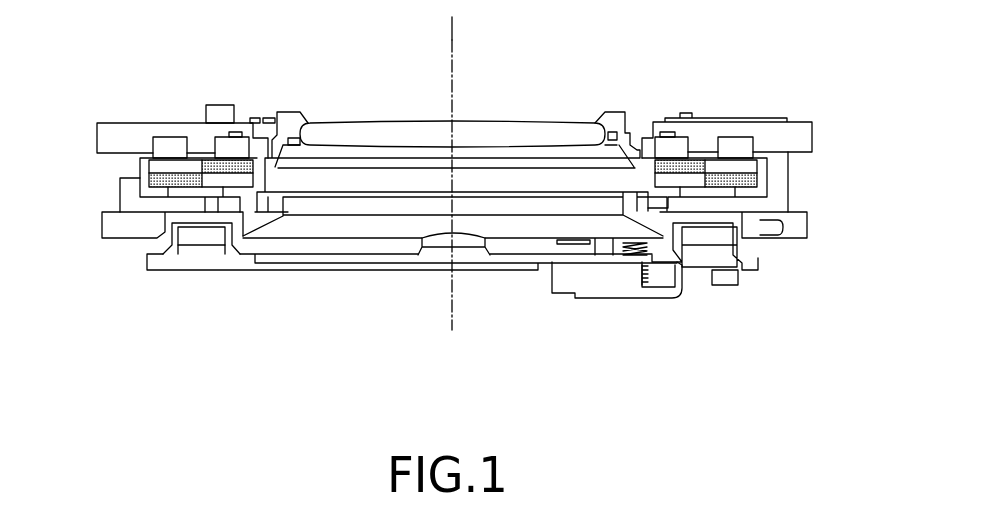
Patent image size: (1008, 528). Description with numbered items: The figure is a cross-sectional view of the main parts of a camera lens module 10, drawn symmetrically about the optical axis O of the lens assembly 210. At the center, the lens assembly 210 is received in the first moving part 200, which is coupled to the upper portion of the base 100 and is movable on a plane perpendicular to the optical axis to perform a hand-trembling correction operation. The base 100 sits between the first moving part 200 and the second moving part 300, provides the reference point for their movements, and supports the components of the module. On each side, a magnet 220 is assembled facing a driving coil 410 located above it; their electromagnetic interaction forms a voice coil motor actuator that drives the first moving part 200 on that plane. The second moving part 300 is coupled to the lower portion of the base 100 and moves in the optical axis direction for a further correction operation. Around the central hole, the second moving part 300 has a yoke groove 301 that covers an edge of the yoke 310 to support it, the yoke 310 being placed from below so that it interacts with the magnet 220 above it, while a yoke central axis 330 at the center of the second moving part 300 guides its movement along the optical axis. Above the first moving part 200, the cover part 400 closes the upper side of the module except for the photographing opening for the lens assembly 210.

The camera lens module 10 is at (174, 37).
The base 100 is at (777, 200).
The first moving part 200 is at (762, 177).
The lens assembly 210 is at (367, 137).
The magnet 220 is at (157, 168).
The second moving part 300 is at (622, 256).
The yoke groove 301 is at (237, 257).
The yoke 310 is at (178, 255).
The yoke central axis 330 is at (438, 250).
The cover part 400 is at (775, 137).
The driving coil 410 is at (733, 147).